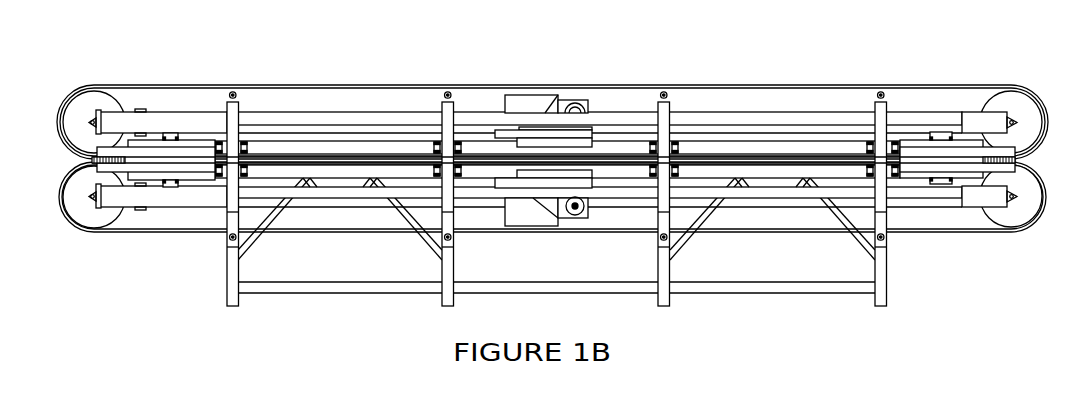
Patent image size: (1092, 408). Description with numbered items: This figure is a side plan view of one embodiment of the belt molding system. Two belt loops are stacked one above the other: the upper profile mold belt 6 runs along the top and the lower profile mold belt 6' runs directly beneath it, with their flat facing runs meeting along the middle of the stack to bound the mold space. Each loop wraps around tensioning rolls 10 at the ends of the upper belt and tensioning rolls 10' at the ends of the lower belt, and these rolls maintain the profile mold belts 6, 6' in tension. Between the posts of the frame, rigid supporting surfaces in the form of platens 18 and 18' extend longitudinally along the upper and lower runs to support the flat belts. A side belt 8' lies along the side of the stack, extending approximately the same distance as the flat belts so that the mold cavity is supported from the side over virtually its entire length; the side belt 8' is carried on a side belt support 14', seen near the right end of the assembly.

The upper profile mold belt 6 is at (552, 95).
The lower profile mold belt 6' is at (552, 223).
The tensioning roll 10 is at (557, 91).
The tensioning roll 10' is at (559, 223).
The platen 18 is at (557, 102).
The platen 18' is at (557, 214).
The side belt support 14' is at (943, 116).
The side belt 8' is at (553, 212).